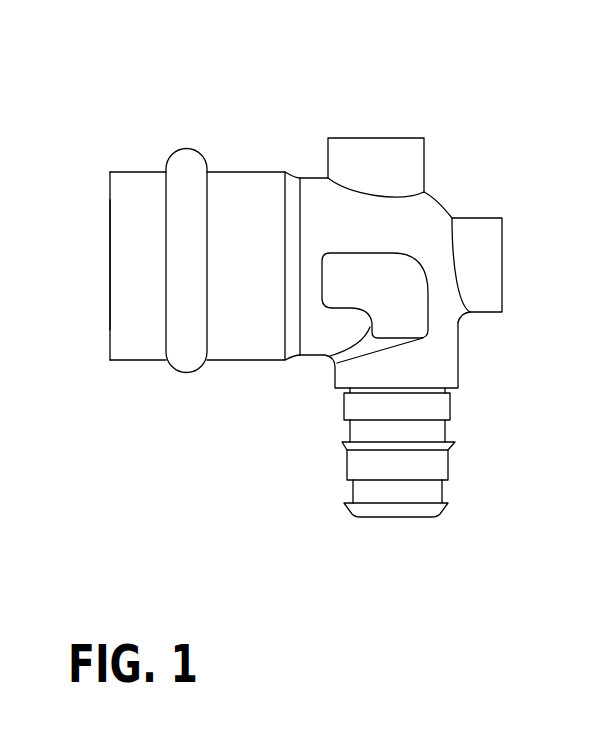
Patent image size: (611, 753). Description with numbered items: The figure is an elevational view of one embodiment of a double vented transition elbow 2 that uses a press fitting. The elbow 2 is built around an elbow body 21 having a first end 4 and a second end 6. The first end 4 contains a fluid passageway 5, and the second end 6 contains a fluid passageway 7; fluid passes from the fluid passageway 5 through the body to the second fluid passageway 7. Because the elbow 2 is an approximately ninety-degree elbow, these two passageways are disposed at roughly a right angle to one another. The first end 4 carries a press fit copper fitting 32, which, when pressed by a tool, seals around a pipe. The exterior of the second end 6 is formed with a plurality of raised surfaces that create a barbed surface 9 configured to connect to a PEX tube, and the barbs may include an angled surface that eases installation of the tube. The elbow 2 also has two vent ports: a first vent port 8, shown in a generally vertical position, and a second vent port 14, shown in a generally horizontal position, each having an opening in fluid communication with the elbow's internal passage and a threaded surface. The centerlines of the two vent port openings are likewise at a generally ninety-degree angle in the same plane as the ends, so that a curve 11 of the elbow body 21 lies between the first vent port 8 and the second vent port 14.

The double vented transition elbow 2 is at (443, 183).
The first end 4 is at (137, 187).
The fluid passageway 5 is at (108, 242).
The second end 6 is at (433, 432).
The fluid passageway 7 is at (417, 513).
The first vent port 8 is at (375, 162).
The barbed surface 9 is at (453, 445).
The curve 11 is at (442, 202).
The second vent port 14 is at (490, 270).
The elbow body 21 is at (317, 330).
The press fit copper fitting 32 is at (185, 170).